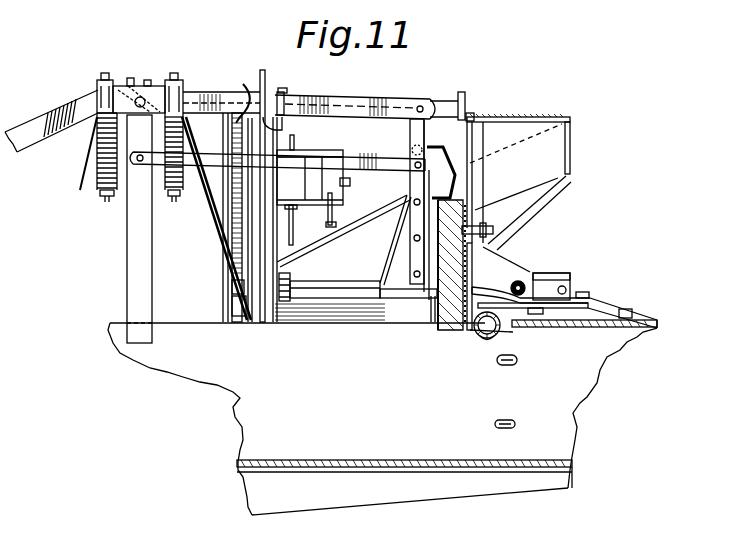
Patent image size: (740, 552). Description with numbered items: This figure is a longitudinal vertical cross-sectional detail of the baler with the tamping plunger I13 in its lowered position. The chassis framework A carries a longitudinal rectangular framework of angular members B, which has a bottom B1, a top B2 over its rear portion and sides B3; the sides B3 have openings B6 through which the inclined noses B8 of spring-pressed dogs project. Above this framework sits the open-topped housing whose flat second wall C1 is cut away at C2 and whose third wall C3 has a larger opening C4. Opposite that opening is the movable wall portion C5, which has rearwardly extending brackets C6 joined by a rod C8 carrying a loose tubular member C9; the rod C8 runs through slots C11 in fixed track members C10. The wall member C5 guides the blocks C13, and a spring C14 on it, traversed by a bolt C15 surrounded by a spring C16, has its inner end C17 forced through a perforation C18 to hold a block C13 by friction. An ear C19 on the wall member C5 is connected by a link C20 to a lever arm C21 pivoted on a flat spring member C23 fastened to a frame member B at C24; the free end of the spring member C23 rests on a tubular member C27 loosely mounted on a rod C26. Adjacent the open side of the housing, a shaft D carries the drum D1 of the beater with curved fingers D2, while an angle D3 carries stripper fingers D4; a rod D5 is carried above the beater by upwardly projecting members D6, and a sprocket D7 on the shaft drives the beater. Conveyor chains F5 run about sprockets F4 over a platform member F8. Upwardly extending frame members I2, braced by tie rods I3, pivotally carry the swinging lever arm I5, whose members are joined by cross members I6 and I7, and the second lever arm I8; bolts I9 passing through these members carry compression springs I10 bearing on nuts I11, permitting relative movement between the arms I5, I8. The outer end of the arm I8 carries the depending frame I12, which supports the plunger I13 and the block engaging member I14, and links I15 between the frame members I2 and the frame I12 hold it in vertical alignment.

The swinging lever arm I5 is at (43, 115).
The bolts I9 is at (106, 78).
The cross member I6 is at (116, 88).
The cross member I7 is at (183, 97).
The sprocket or driven member D7 is at (243, 76).
The cut-away portion C2 is at (268, 64).
The members D6 is at (281, 90).
The second lever arm I8 is at (378, 110).
The rod D5 is at (461, 92).
The downwardly depending frame structure I12 is at (428, 128).
The block engaging member I14 is at (450, 134).
The opening C4 is at (520, 98).
The third wall C3 is at (502, 119).
The movable wall portion C5 is at (480, 186).
The spring C14 is at (543, 182).
The bolt or screw C15 is at (542, 199).
The spring C16 is at (487, 237).
The inner end C17 is at (479, 247).
The brackets C6 is at (521, 279).
The rod C8 is at (528, 282).
The tubular member C9 is at (546, 272).
The slots C11 is at (571, 280).
The fixed track members C10 is at (589, 302).
The link C20 is at (581, 292).
The lever arm C21 is at (603, 306).
The fastening point C24 is at (632, 312).
The flat spring member C23 is at (548, 314).
The tubular member C27 is at (477, 337).
The rod C26 is at (483, 340).
The perforation C18 is at (437, 309).
The ear C19 is at (437, 323).
The blocks C13 is at (445, 320).
The second wall C1 is at (246, 299).
The angle D3 is at (318, 153).
The cylinder or drum-like portion D1 is at (350, 189).
The shaft D is at (350, 182).
The curved fingers D2 is at (322, 231).
The stripper fingers D4 is at (314, 203).
The link I15 is at (385, 142).
The tamping plunger I13 is at (393, 248).
The sprockets F4 is at (288, 280).
The conveyor chains F5 is at (290, 300).
The platform member F8 is at (248, 295).
The upwardly extending frame members I2 is at (130, 259).
The tie rods I3 is at (82, 186).
The compression springs I10 is at (97, 134).
The plates or nuts I11 is at (101, 201).
The inclined noses B8 is at (509, 356).
The openings B6 is at (518, 359).
The sides B3 is at (565, 430).
The top B2 is at (650, 330).
The angular members B is at (546, 472).
The bottom B1 is at (496, 472).
The framework elements A is at (382, 504).